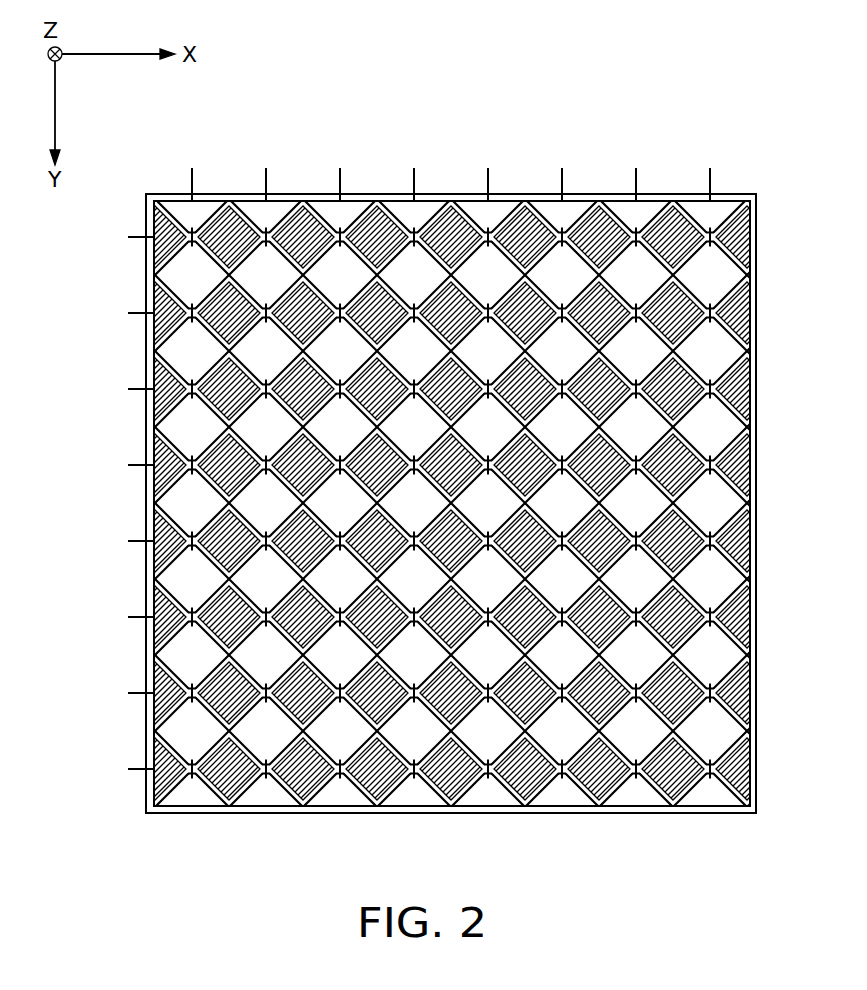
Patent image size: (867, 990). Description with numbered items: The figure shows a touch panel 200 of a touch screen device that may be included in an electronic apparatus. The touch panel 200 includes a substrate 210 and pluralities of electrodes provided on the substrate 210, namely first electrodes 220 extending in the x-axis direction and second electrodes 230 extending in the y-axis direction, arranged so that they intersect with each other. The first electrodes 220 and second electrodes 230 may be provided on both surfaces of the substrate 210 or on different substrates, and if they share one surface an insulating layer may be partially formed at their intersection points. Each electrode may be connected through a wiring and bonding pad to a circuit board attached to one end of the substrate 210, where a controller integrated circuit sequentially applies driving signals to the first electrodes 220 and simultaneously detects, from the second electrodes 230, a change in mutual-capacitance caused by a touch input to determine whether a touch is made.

The touch panel 200 is at (551, 103).
The substrate 210 is at (153, 194).
The first electrodes 220 is at (158, 262).
The second electrodes 230 is at (205, 205).